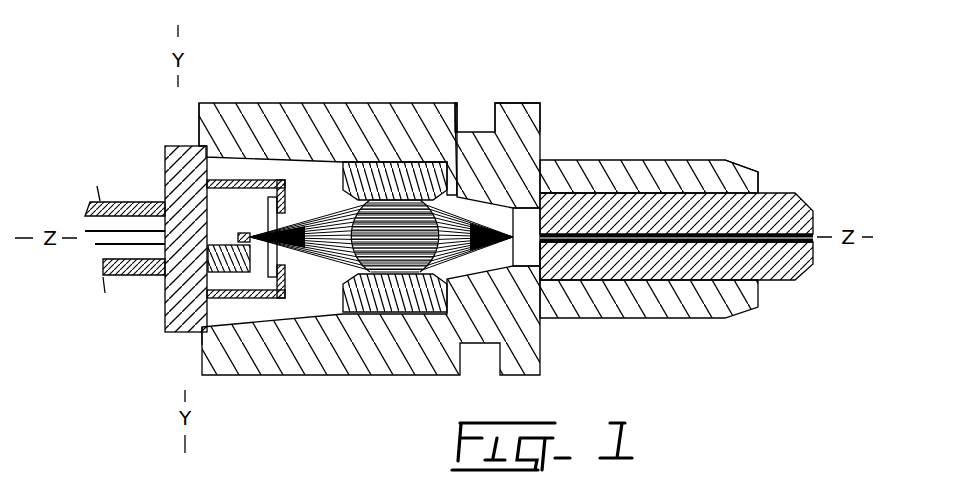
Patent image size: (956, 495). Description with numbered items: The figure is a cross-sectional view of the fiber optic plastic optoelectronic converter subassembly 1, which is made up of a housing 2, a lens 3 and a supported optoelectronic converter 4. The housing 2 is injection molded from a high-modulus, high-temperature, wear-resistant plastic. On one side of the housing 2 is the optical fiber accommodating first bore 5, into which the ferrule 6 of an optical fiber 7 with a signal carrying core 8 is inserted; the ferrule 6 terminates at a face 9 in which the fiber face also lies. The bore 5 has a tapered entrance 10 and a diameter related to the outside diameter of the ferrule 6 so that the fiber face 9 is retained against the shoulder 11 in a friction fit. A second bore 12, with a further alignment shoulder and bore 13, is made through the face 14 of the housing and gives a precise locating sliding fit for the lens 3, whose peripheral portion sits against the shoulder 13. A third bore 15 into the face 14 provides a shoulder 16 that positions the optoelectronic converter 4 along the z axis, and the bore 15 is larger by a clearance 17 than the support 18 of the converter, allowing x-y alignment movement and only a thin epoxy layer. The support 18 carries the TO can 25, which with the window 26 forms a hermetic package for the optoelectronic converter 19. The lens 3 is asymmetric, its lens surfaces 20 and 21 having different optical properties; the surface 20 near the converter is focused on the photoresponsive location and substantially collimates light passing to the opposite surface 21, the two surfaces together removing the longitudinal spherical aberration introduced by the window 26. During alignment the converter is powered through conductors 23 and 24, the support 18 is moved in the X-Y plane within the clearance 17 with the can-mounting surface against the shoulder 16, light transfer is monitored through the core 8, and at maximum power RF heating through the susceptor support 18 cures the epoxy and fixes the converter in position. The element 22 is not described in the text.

The subassembly 1 is at (130, 119).
The housing 2 is at (522, 130).
The lens 3 is at (370, 310).
The optoelectronic converter 4 is at (250, 235).
The first bore 5 is at (665, 190).
The ferrule 6 is at (787, 220).
The optical fiber 7 is at (760, 244).
The signal carrying core 8 is at (797, 240).
The face 9 is at (583, 192).
The tapered entrance 10 is at (750, 192).
The shoulder 11 is at (516, 214).
The second bore 12 is at (336, 106).
The alignment shoulder and bore 13 is at (508, 155).
The face 14 is at (199, 125).
The third bore 15 is at (199, 102).
The shoulder 16 is at (212, 328).
The clearance 17 is at (205, 333).
The support 18 is at (178, 292).
The optoelectronic converter 19 is at (243, 167).
The lens surface 20 is at (350, 265).
The lens surface 21 is at (438, 253).
The fiber end face 22 is at (545, 250).
The conductor 23 is at (123, 201).
The conductor 24 is at (125, 276).
The TO can 25 is at (265, 176).
The window 26 is at (279, 250).